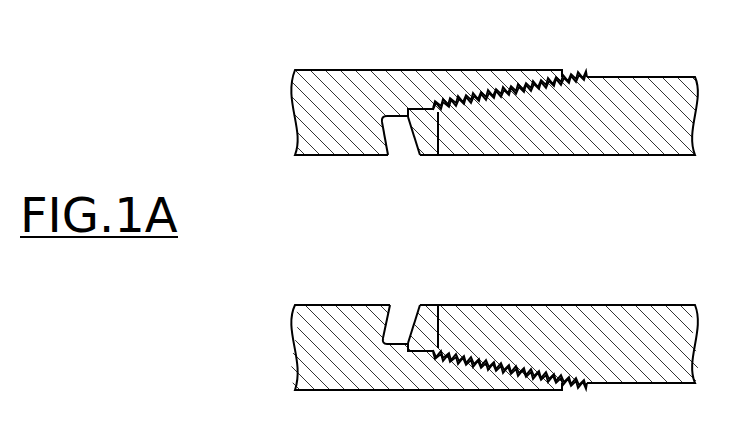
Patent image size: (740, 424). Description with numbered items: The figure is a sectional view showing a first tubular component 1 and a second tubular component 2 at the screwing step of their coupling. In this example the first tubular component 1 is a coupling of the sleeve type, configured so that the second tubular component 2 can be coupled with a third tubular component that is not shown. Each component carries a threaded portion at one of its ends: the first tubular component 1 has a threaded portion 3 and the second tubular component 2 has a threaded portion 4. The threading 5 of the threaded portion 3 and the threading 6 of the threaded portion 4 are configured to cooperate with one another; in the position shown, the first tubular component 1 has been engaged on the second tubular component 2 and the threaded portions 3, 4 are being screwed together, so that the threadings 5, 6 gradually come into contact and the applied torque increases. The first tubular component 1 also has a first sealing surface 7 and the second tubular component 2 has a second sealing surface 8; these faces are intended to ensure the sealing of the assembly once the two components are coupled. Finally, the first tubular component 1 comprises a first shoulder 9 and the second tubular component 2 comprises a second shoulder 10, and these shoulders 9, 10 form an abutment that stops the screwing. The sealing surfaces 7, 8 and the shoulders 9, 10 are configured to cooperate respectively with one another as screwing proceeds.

The first tubular component 1 is at (343, 70).
The second tubular component 2 is at (578, 150).
The threaded portion 3 is at (523, 73).
The threaded portion 4 is at (480, 140).
The threading 5 is at (493, 90).
The threading 6 is at (517, 100).
The first sealing surface 7 is at (397, 120).
The second sealing surface 8 is at (437, 157).
The first shoulder 9 is at (383, 157).
The second shoulder 10 is at (406, 143).